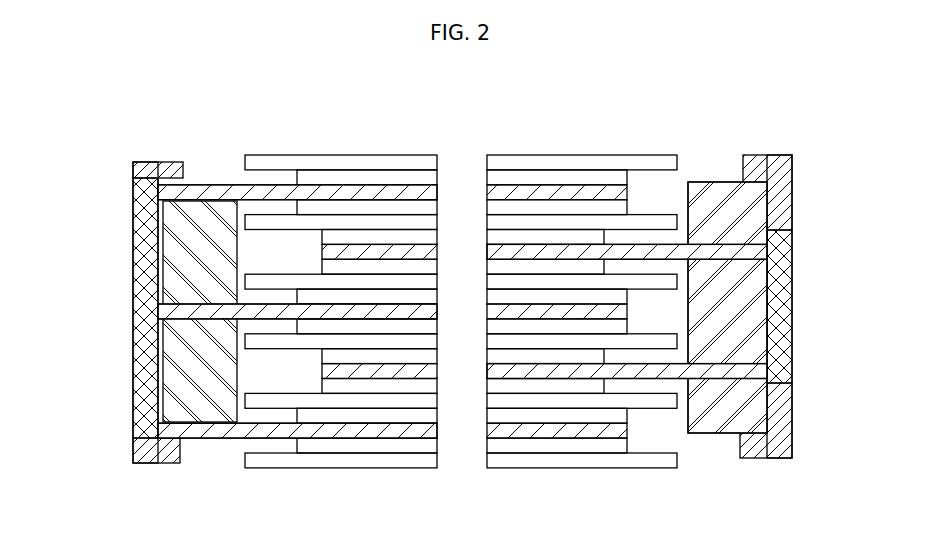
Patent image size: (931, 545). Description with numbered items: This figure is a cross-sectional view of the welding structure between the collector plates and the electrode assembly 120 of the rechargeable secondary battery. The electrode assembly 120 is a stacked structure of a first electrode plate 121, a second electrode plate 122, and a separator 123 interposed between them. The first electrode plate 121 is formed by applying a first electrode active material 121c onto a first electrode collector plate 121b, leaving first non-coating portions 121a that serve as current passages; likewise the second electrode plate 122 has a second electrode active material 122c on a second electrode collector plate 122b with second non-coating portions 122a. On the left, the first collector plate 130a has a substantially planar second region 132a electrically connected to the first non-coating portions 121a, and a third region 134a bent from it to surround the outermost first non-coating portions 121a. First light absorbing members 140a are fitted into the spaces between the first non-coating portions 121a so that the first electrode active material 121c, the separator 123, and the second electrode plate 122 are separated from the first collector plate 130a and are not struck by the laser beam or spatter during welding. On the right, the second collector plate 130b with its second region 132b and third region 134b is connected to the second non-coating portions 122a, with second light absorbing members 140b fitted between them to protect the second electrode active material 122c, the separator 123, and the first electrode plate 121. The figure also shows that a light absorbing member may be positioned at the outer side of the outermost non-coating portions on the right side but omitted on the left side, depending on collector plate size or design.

The electrode assembly 120 is at (462, 296).
The first electrode plate 121 is at (392, 268).
The first non-coating portions 121a is at (206, 186).
The first electrode collector plate 121b is at (336, 186).
The first electrode active material 121c is at (421, 212).
The second electrode plate 122 is at (544, 313).
The second non-coating portions 122a is at (652, 243).
The second electrode collector plate 122b is at (600, 232).
The second electrode active material 122c is at (562, 378).
The separator 123 is at (290, 217).
The first collector plate 130a is at (116, 305).
The second collector plate 130b is at (809, 288).
The second region 132a is at (112, 346).
The second region 132b is at (810, 342).
The third region 134a is at (150, 464).
The third region 134b is at (762, 460).
The first light absorbing members 140a is at (178, 345).
The second light absorbing members 140b is at (750, 265).